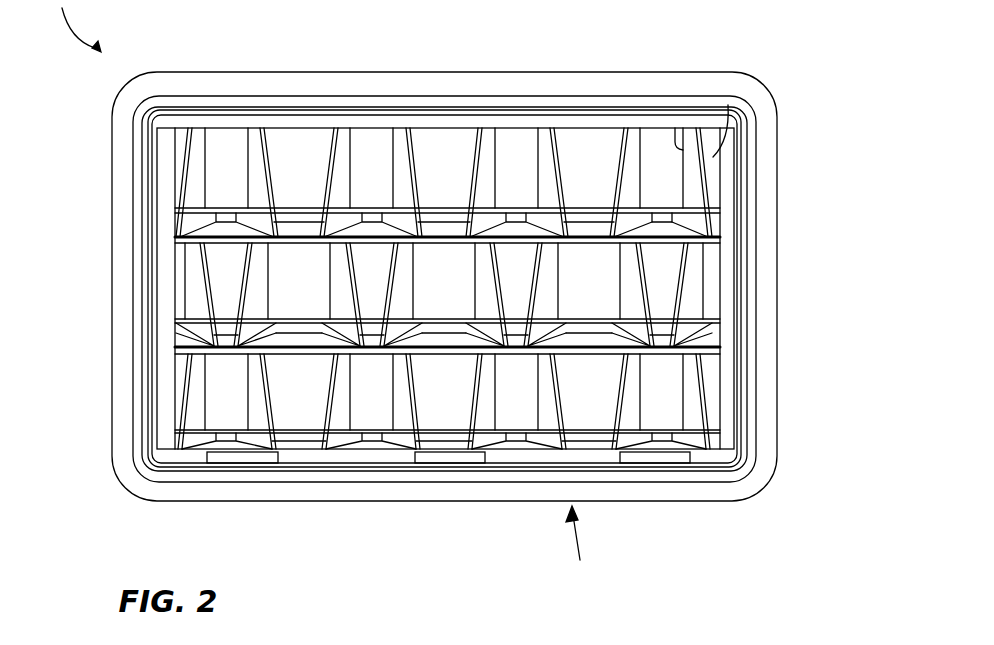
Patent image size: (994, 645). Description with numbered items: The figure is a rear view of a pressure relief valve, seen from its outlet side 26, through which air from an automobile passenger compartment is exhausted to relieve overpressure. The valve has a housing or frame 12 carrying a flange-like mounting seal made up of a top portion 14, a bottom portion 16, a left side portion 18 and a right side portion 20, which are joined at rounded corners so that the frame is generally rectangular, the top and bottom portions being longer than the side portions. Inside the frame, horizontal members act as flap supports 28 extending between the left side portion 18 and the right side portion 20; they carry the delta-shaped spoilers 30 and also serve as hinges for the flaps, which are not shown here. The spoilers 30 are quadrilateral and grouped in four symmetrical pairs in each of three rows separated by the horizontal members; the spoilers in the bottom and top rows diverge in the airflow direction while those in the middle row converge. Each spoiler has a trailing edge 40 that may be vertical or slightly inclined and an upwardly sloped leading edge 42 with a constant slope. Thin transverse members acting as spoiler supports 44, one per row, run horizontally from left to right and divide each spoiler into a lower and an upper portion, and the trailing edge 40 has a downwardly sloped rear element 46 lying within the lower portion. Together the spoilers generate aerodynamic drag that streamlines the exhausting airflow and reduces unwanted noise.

The housing or frame 12 is at (743, 485).
The top portion 14 is at (428, 88).
The bottom portion 16 is at (492, 485).
The left side portion 18 is at (122, 173).
The right side portion 20 is at (765, 292).
The outlet side 26 is at (578, 547).
The flap supports 28 is at (705, 221).
The delta-shaped spoilers 30 is at (196, 162).
The trailing edge 40 is at (675, 128).
The leading edge 42 is at (728, 105).
The spoiler supports 44 is at (578, 214).
The rear element 46 is at (682, 222).